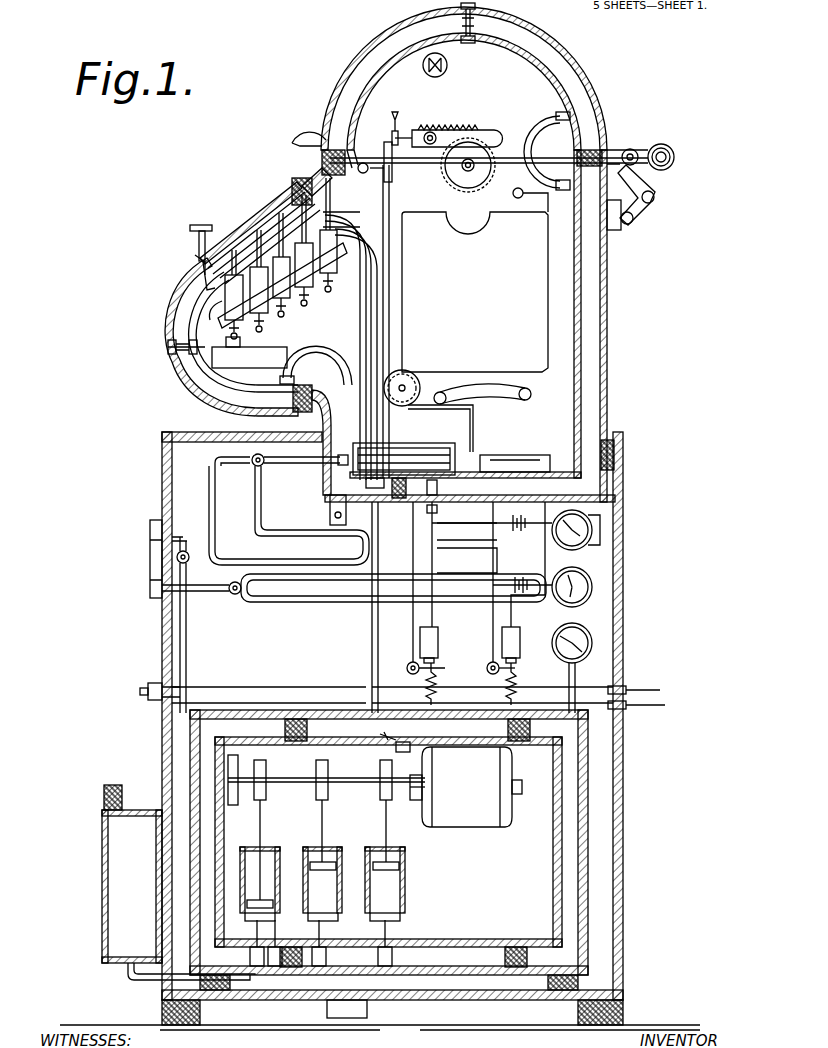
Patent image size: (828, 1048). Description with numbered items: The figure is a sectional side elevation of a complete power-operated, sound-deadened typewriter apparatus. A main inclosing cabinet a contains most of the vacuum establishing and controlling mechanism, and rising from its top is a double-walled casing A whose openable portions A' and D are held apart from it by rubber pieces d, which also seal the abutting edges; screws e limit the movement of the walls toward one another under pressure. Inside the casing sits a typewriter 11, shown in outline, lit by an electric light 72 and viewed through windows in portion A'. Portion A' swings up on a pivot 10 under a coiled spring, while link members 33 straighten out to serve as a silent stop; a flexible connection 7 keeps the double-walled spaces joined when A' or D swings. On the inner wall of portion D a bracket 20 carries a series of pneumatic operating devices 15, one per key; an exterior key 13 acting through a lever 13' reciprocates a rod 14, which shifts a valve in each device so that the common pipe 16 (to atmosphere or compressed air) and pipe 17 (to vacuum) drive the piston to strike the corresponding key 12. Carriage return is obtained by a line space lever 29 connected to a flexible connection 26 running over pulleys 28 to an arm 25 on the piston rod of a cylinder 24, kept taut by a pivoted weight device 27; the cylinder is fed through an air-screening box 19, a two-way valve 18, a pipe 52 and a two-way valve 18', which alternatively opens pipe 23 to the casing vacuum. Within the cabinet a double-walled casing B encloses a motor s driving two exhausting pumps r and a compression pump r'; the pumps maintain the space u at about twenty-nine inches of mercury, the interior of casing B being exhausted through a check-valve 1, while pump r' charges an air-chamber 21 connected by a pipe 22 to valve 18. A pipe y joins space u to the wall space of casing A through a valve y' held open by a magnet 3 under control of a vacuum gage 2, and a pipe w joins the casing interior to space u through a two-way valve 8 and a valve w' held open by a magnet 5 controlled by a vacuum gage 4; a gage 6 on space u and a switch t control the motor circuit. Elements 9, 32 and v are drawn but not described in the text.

The upper casing portion A' is at (467, 254).
The casing A is at (491, 267).
The screws e is at (462, 24).
The electric light 72 is at (448, 68).
The rubber pieces d is at (340, 158).
The line space lever 29 is at (400, 125).
The pulleys 28 is at (392, 172).
The pipe 9 is at (292, 140).
The flexible connection 7 is at (545, 125).
The pivot 32 is at (631, 148).
The pivot 10 is at (670, 148).
The link members 33 is at (633, 226).
The typewriter 11 is at (535, 290).
The key 13 is at (181, 243).
The lever 13' is at (197, 229).
The rod 14 is at (198, 275).
The pipe 16 is at (245, 240).
The pipe 17 is at (268, 230).
The keys 12 is at (325, 292).
The bracket 20 is at (305, 312).
The pneumatic operating devices 15 is at (210, 305).
The casing portion D is at (170, 318).
The flexible connection 26 is at (390, 322).
The pivoted weight device 27 is at (531, 394).
The arm 25 is at (480, 420).
The cylinder 24 is at (400, 450).
The cabinet a is at (162, 462).
The two-way valve 18' is at (300, 472).
The pipe 52 is at (212, 500).
The pipe 23 is at (262, 508).
The two-way valve 18 is at (191, 536).
The air-screening box 19 is at (150, 535).
The pipe 22 is at (186, 665).
The two-way valve 8 is at (232, 594).
The switch t is at (150, 700).
The pipe y is at (409, 553).
The pipe w is at (467, 550).
The valve y' is at (418, 605).
The valve w' is at (488, 588).
The magnet 3 is at (440, 640).
The magnet 5 is at (520, 640).
The vacuum gage 2 is at (595, 530).
The vacuum gage 4 is at (595, 588).
The gage 6 is at (553, 650).
The double-walled casing B is at (565, 860).
The vacuum space u is at (570, 893).
The check-valve 1 is at (395, 752).
The compression pump r' is at (264, 868).
The exhausting pumps r is at (354, 866).
The motor s is at (475, 820).
The valves v is at (328, 958).
The air-chamber 21 is at (125, 872).